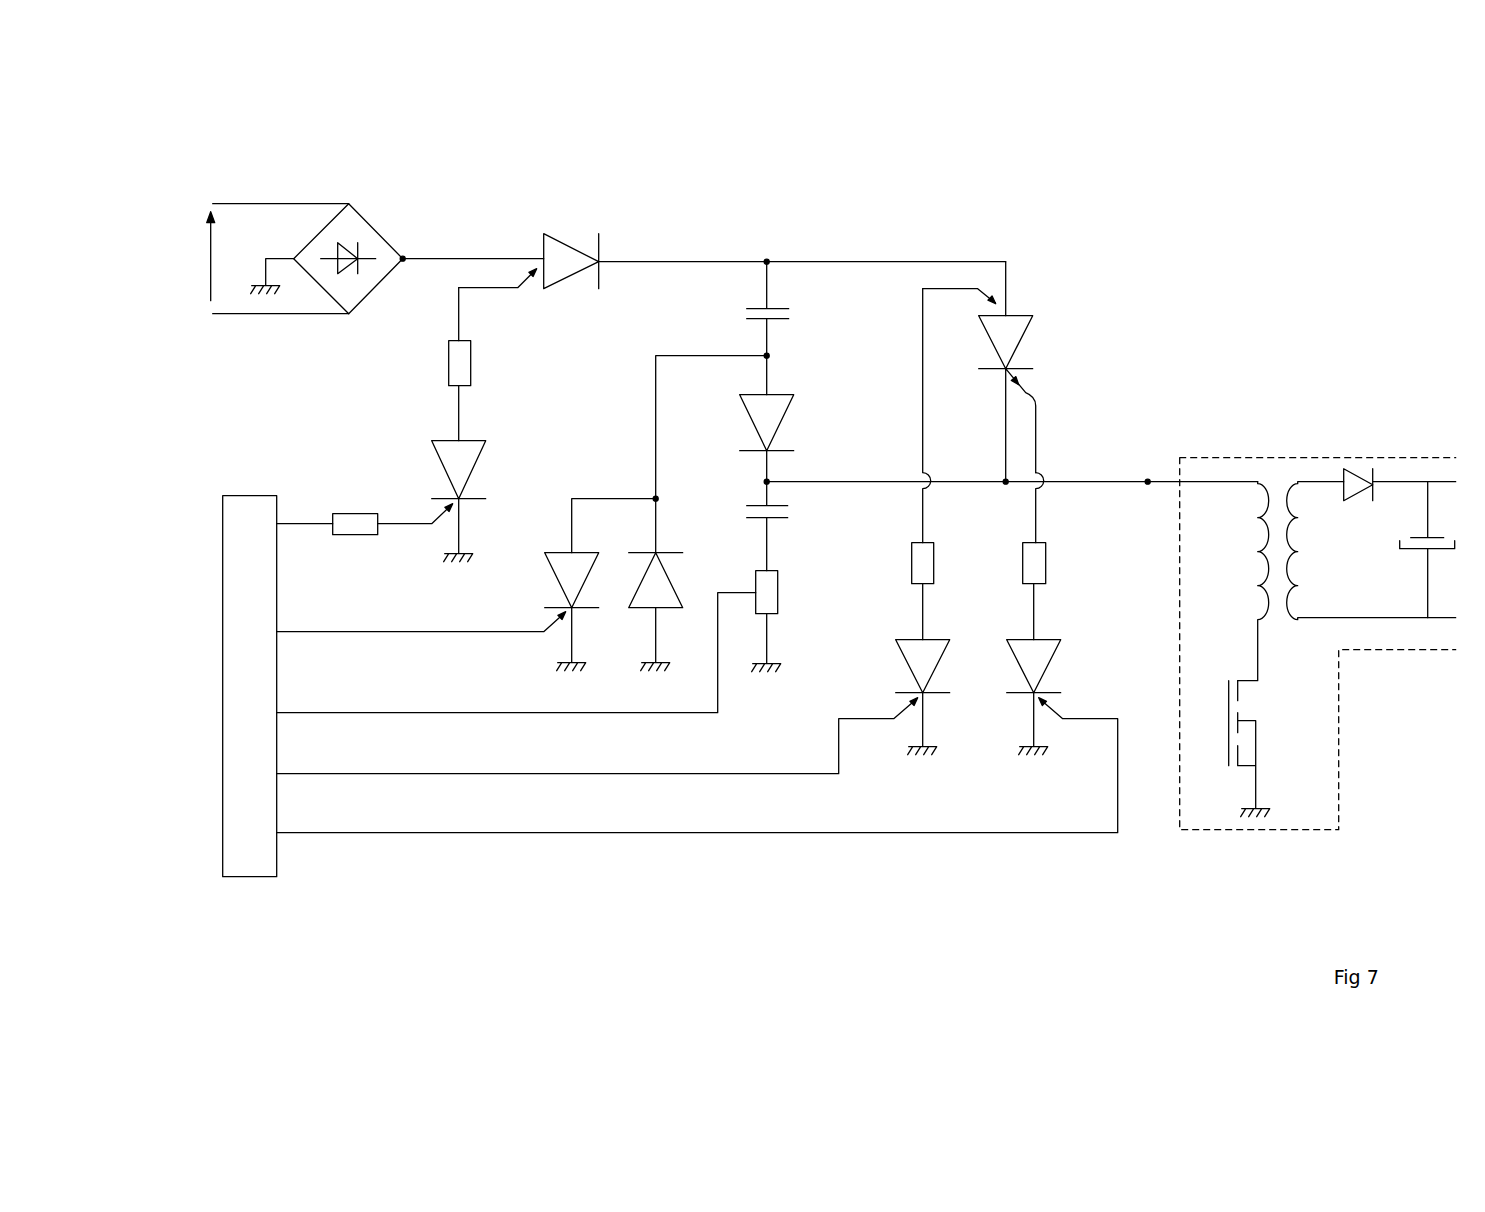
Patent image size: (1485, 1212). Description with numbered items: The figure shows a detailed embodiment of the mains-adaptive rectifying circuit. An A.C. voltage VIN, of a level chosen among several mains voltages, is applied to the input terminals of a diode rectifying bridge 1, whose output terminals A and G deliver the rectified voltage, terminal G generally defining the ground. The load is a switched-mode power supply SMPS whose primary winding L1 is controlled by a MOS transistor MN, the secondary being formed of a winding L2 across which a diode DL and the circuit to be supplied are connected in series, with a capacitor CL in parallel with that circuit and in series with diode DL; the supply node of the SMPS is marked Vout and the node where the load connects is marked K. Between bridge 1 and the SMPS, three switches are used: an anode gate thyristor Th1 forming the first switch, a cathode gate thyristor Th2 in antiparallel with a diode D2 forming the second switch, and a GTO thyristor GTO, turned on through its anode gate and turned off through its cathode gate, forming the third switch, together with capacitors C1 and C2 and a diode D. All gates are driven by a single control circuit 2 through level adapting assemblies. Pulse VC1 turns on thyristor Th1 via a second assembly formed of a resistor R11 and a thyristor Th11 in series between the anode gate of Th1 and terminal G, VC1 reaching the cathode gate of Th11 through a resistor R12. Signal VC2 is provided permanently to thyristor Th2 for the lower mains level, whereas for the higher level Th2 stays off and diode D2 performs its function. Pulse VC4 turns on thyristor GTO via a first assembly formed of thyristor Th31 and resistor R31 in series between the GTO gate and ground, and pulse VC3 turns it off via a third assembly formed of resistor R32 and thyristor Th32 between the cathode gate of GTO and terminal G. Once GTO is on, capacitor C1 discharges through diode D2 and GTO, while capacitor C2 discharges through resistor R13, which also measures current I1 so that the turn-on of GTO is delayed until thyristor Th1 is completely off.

The diode rectifying bridge 1 is at (362, 225).
The control circuit 2 is at (243, 493).
The output terminal A is at (403, 256).
The output terminal G is at (265, 276).
The node K is at (1147, 479).
The A.C. voltage Vin VIN is at (250, 259).
The output voltage node Vout is at (1012, 470).
The anode gate thyristor Th1 is at (732, 247).
The thyristor Th11 is at (434, 501).
The cathode gate thyristor Th2 is at (575, 585).
The thyristor Th31 is at (894, 697).
The thyristor Th32 is at (1061, 697).
The GTO thyristor GTO is at (1004, 372).
The diode D is at (755, 420).
The diode D2 is at (668, 583).
The capacitor C1 is at (722, 379).
The capacitor C2 is at (747, 526).
The resistor R11 is at (435, 364).
The resistor R12 is at (355, 538).
The resistor R13 is at (789, 621).
The resistor R31 is at (900, 464).
The resistor R32 is at (1055, 556).
The control pulse VC1 is at (364, 508).
The turn-on signal VC2 is at (421, 619).
The control pulse VC3 is at (697, 765).
The control signal VC4 is at (597, 736).
The current I1 is at (516, 653).
The switched-mode power supply SMPS is at (1304, 465).
The primary winding L1 is at (1250, 524).
The secondary winding L2 is at (1302, 528).
The diode DL is at (1400, 499).
The capacitor CL is at (1431, 550).
The MOS transistor MN is at (1228, 749).